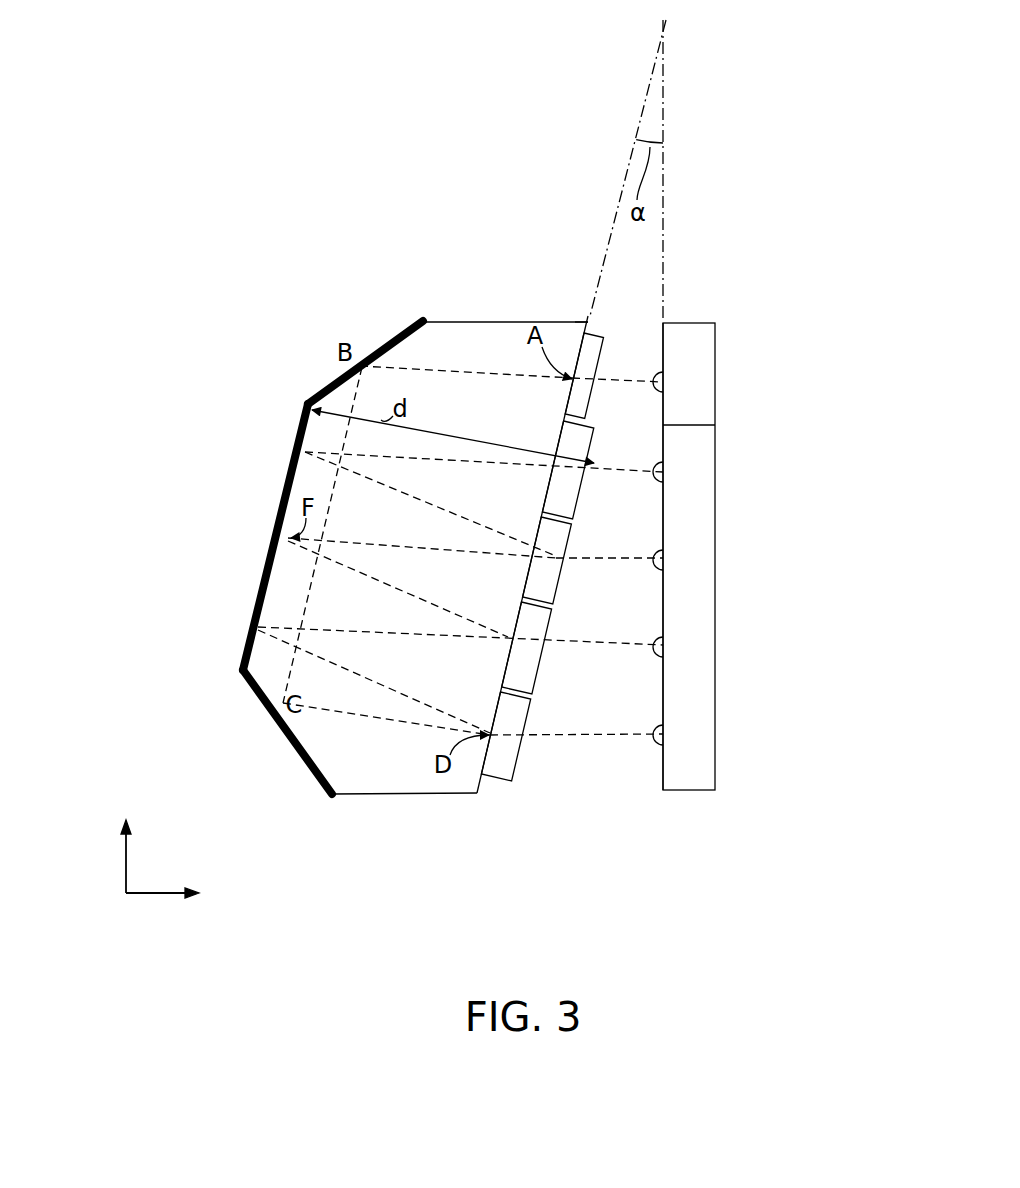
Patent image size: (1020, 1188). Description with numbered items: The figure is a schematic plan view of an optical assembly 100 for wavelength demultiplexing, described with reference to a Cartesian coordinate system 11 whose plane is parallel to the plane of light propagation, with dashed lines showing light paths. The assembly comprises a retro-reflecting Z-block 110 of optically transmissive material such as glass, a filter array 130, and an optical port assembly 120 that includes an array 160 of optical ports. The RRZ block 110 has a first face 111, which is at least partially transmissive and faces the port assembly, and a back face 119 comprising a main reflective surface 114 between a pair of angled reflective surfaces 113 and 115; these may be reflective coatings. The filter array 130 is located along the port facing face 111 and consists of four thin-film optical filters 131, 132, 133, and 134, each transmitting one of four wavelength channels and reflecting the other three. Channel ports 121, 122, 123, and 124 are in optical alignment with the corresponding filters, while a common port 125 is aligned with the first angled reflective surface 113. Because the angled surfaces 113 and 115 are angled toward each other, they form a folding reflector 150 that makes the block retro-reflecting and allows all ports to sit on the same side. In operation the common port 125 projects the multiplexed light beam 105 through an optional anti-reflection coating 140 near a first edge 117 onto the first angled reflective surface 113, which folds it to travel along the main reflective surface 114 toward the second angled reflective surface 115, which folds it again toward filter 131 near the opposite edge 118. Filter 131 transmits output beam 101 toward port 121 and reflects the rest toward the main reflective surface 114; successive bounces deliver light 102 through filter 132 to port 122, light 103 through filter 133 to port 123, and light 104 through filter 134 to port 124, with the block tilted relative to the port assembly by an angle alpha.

The optical assembly 100 is at (538, 79).
The Cartesian coordinate system 11 is at (107, 875).
The retro-reflecting Z-block 110 is at (447, 322).
The first face 111 is at (553, 440).
The first angled reflective surface 113 is at (378, 347).
The main reflective surface 114 is at (282, 505).
The second angled reflective surface 115 is at (300, 758).
The first edge 117 is at (587, 320).
The opposite edge 118 is at (475, 797).
The back face 119 is at (283, 341).
The optical port assembly 120 is at (697, 322).
The channel port 121 is at (669, 732).
The channel port 122 is at (669, 645).
The channel port 123 is at (669, 557).
The channel port 124 is at (669, 469).
The common port 125 is at (669, 378).
The filter array 130 is at (493, 797).
The optical filter 131 is at (513, 781).
The optical filter 132 is at (508, 661).
The optical filter 133 is at (528, 568).
The optical filter 134 is at (547, 481).
The anti-reflection coating 140 is at (605, 340).
The folding reflector 150 is at (318, 381).
The array of optical ports 160 is at (657, 783).
The output channel beam 101 is at (588, 740).
The light of channel lambda-two 102 is at (590, 650).
The light of channel lambda-three 103 is at (610, 562).
The light of channel lambda-four 104 is at (627, 477).
The multiplexed light beam 105 is at (628, 388).